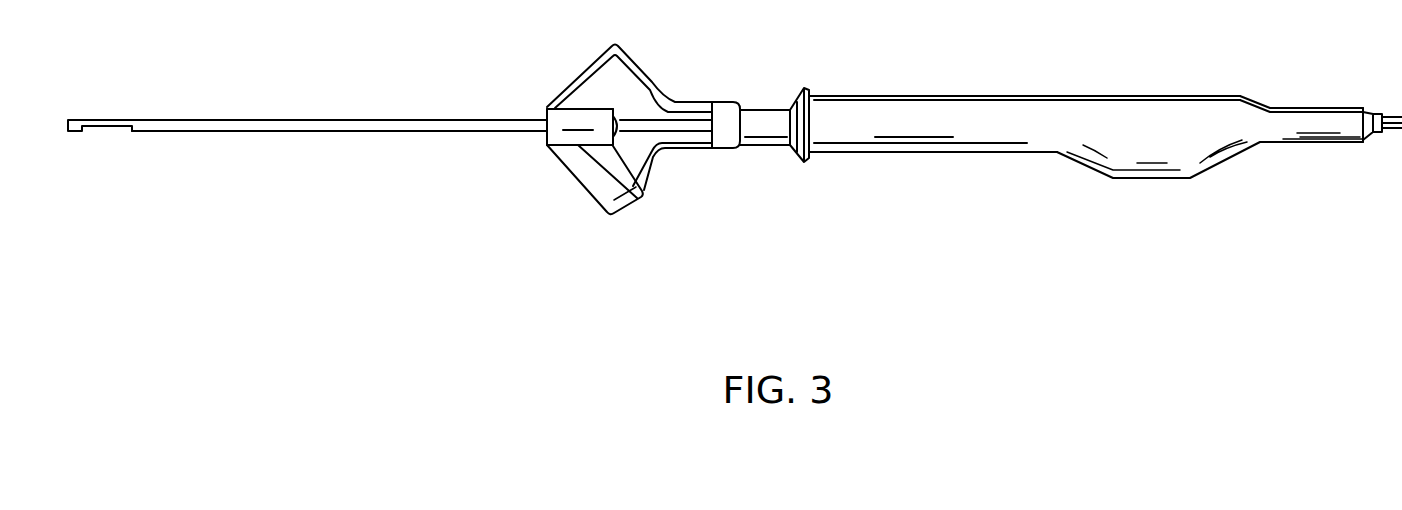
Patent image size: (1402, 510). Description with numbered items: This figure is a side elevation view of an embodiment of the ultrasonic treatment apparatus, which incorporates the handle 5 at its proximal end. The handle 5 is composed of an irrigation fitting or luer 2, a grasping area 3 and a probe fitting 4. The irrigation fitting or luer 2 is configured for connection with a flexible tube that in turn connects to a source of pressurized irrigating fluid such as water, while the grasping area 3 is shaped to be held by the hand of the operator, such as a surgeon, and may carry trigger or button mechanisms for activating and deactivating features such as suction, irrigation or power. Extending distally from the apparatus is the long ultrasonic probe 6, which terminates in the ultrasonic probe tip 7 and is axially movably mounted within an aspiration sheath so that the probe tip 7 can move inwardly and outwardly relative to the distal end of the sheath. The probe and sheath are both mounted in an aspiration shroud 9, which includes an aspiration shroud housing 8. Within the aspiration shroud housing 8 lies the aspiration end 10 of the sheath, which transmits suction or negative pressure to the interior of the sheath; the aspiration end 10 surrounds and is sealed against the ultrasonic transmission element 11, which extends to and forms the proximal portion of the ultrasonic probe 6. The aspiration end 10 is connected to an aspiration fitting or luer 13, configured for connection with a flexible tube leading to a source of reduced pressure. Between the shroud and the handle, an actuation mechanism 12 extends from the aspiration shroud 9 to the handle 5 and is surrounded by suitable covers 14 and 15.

The irrigation fitting or luer 2 is at (1337, 128).
The grasping area 3 is at (1158, 122).
The probe fitting 4 is at (925, 128).
The handle 5 is at (1173, 236).
The ultrasonic probe 6 is at (343, 134).
The ultrasonic probe tip 7 is at (70, 134).
The aspiration shroud housing 8 is at (559, 166).
The aspiration shroud 9 is at (570, 250).
The aspiration end 10 is at (583, 113).
The ultrasonic transmission element 11 is at (677, 130).
The actuation mechanism 12 is at (809, 130).
The aspiration fitting or luer 13 is at (645, 197).
The cover 14 is at (727, 132).
The cover 15 is at (777, 142).